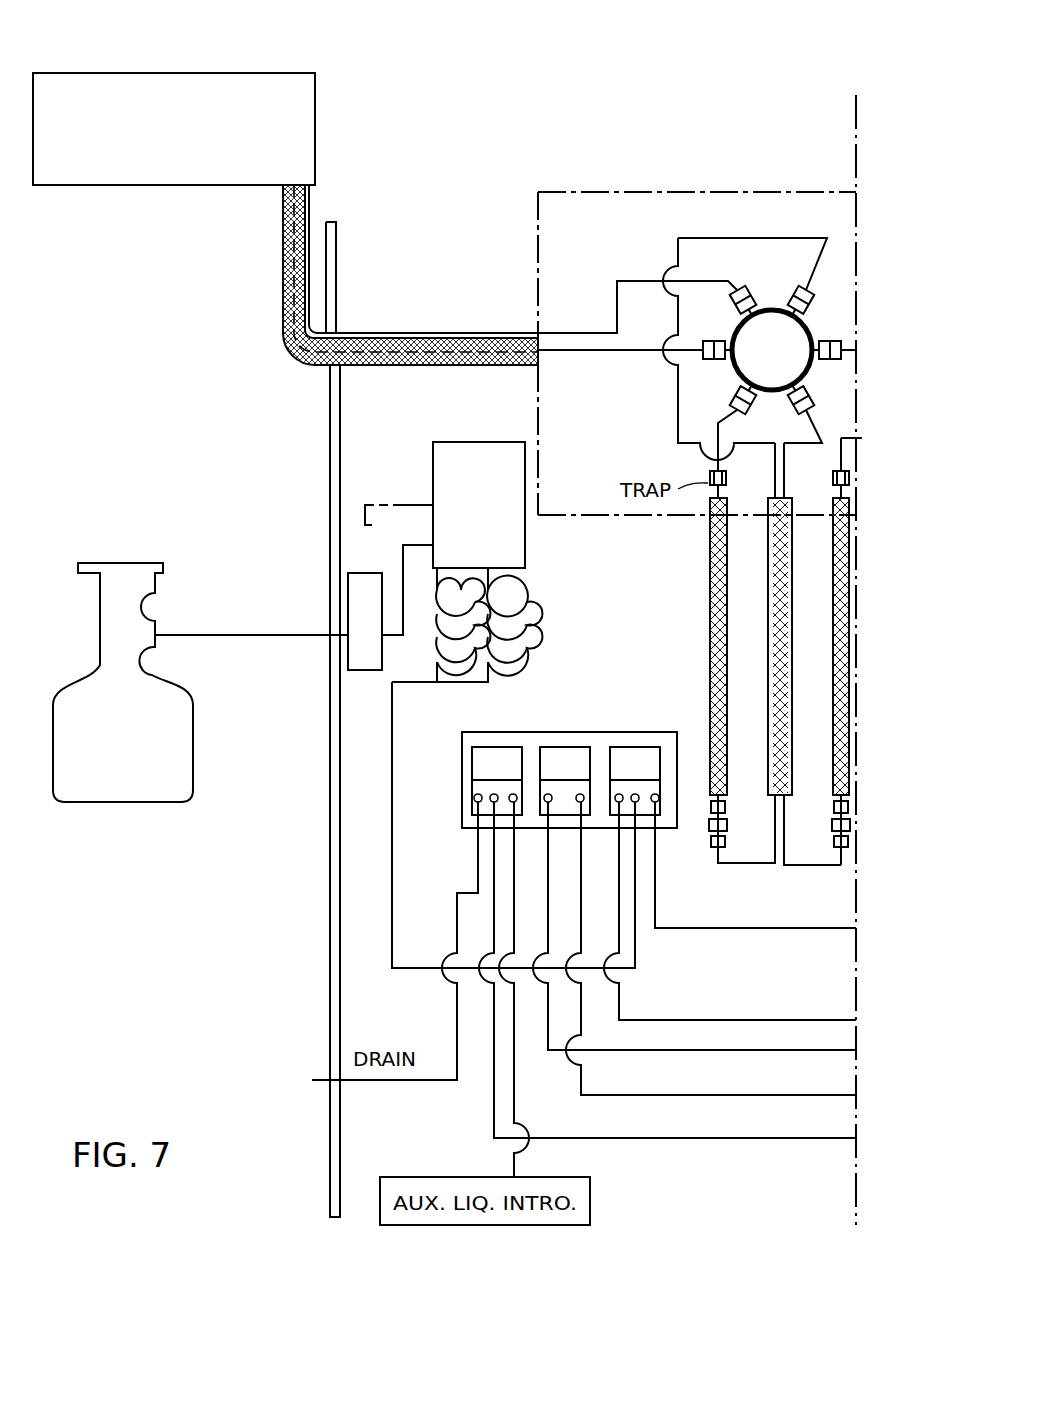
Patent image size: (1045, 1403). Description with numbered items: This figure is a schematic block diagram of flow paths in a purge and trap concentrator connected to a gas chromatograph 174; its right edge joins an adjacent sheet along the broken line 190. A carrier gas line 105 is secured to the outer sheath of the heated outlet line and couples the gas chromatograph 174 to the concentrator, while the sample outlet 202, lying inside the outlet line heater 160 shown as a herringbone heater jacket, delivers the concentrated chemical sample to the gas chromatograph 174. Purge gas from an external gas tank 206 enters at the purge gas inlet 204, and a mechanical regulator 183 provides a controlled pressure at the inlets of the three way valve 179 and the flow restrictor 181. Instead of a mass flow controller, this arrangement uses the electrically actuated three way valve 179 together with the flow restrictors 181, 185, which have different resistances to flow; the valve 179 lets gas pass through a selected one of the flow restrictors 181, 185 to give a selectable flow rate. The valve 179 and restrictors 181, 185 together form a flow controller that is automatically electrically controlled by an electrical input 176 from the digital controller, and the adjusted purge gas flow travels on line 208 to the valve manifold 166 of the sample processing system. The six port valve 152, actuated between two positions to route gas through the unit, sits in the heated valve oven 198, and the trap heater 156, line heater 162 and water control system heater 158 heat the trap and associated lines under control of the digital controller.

The gas chromatograph 174 is at (145, 161).
The carrier gas line 105 is at (358, 331).
The outlet line heater 160 is at (355, 368).
The sample outlet 202 is at (428, 368).
The three way valve 179 is at (493, 442).
The electrical input 176 is at (399, 520).
The purge gas inlet 204 is at (403, 572).
The mechanical regulator 183 is at (348, 592).
The flow restrictor 181 is at (528, 620).
The flow restrictor 185 is at (447, 638).
The valve manifold 166 is at (540, 732).
The gas tank 206 is at (200, 682).
The line 208 is at (392, 866).
The trap heater 156 is at (712, 627).
The line heater 162 is at (768, 635).
The water control system heater 158 is at (833, 630).
The six port valve 152 is at (755, 362).
The broken line 190 is at (853, 110).
The heated valve oven 198 is at (633, 192).